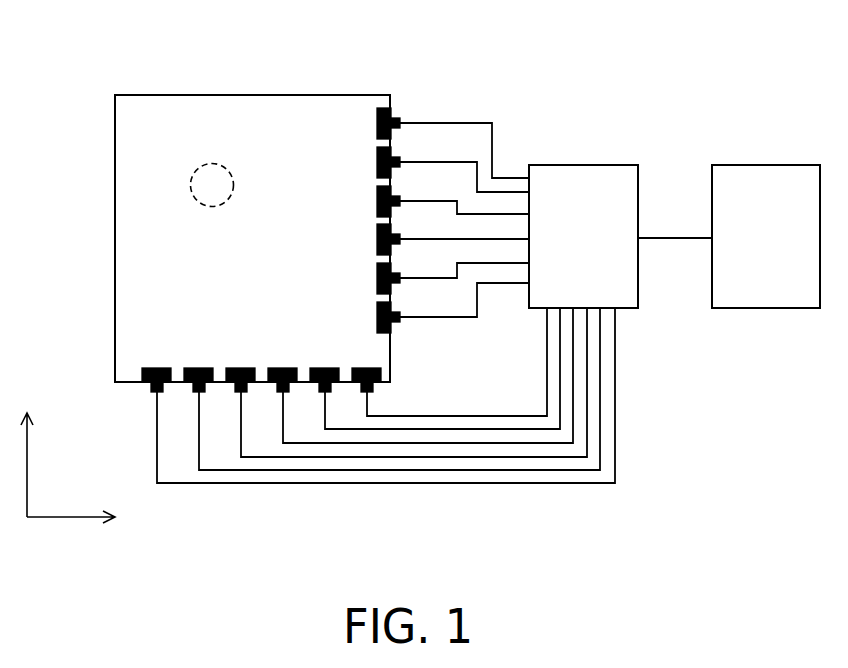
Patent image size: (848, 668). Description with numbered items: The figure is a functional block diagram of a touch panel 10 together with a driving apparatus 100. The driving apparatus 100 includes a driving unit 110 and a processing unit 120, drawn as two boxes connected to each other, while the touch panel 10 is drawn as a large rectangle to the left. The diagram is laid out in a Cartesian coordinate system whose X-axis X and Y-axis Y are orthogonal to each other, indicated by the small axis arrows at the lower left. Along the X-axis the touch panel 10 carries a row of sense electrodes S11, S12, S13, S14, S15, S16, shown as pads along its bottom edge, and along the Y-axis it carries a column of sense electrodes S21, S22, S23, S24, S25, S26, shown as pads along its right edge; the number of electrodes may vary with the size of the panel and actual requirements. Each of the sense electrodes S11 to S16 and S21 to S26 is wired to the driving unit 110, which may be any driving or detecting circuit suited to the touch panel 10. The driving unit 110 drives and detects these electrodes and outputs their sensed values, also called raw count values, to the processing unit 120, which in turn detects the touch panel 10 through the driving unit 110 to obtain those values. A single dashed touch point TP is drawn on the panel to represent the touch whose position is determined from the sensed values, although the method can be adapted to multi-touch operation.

The touch panel 10 is at (253, 95).
The touch point TP is at (213, 207).
The sense electrode S11 is at (370, 395).
The sense electrode S12 is at (383, 389).
The sense electrode S13 is at (398, 382).
The sense electrode S14 is at (412, 375).
The sense electrode S15 is at (426, 368).
The sense electrode S16 is at (441, 362).
The sense electrode S21 is at (453, 313).
The sense electrode S22 is at (453, 284).
The sense electrode S23 is at (453, 245).
The sense electrode S24 is at (453, 207).
The sense electrode S25 is at (453, 169).
The sense electrode S26 is at (453, 143).
The driving apparatus 100 is at (674, 159).
The driving unit 110 is at (617, 165).
The processing unit 120 is at (747, 165).
The X-axis X is at (82, 516).
The Y-axis Y is at (27, 449).